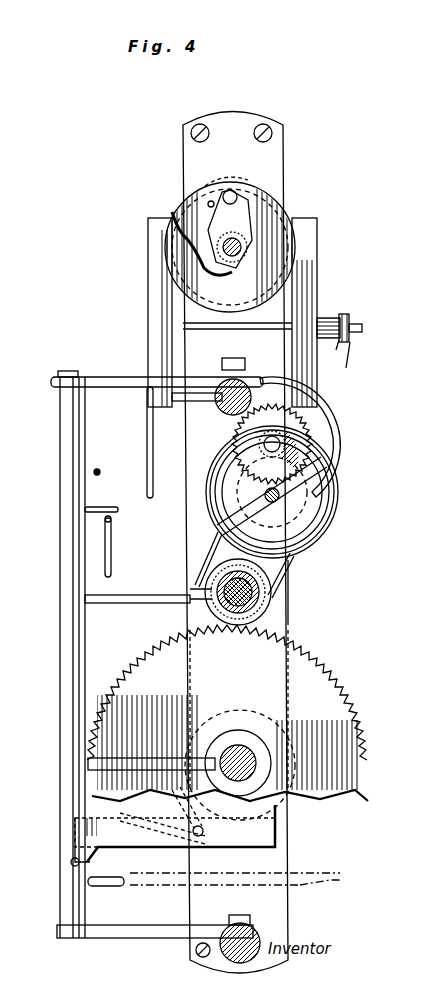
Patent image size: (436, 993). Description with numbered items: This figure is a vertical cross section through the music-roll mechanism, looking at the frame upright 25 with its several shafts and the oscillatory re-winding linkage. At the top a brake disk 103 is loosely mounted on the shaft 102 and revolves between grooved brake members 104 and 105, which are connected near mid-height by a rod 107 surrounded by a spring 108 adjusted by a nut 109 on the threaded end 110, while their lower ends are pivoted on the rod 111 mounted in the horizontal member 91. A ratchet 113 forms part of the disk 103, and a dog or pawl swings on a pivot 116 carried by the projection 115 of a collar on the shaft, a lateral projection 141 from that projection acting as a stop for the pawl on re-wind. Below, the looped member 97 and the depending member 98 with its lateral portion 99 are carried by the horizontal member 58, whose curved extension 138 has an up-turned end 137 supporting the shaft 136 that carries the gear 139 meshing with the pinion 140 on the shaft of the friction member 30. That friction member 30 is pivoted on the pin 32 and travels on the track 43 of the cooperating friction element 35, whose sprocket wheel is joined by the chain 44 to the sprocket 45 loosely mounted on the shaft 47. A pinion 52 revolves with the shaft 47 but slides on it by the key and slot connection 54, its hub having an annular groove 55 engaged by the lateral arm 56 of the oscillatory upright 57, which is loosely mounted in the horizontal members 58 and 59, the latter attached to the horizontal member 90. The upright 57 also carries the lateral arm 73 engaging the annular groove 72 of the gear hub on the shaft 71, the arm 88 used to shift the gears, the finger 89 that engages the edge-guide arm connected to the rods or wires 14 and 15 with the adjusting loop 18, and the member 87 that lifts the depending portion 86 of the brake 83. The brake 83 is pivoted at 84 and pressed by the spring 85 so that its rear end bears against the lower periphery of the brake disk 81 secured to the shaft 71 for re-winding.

The rod or wire 14 is at (98, 469).
The rod or wire 15 is at (111, 519).
The loop portion 18 is at (111, 546).
The upright 25 is at (228, 112).
The friction member 30 is at (272, 496).
The pin 32 is at (312, 540).
The friction element 35 is at (334, 505).
The track 43 is at (296, 566).
The chain 44 is at (322, 592).
The sprocket 45 is at (212, 562).
The shaft 47 is at (236, 626).
The pinion 52 is at (190, 610).
The key and slot connection 54 is at (288, 610).
The annular groove 55 is at (270, 598).
The lateral arm 56 is at (128, 595).
The upright 57 is at (58, 526).
The horizontal member 58 is at (99, 376).
The horizontal member 59 is at (150, 932).
The shaft 71 is at (252, 752).
The annular groove 72 is at (236, 730).
The lateral arm 73 is at (130, 758).
The brake disk 81 is at (280, 812).
The brake 83 is at (105, 828).
The pivot 84 is at (200, 836).
The spring 85 is at (168, 832).
The depending portion 86 is at (72, 838).
The member 87 is at (70, 861).
The arm 88 is at (158, 883).
The finger 89 is at (102, 507).
The horizontal member 90 is at (260, 938).
The horizontal member 91 is at (230, 412).
The looped member 97 is at (200, 378).
The member 98 is at (172, 406).
The lateral portion 99 is at (153, 490).
The shaft 102 is at (232, 257).
The brake disk 103 is at (282, 218).
The brake member 104 is at (150, 266).
The brake member 105 is at (314, 270).
The rod 107 is at (233, 358).
The spring 108 is at (330, 318).
The nut 109 is at (339, 353).
The threaded end 110 is at (339, 364).
The rod 111 is at (196, 398).
The ratchet 113 is at (215, 262).
The projection 115 is at (218, 186).
The pivot 116 is at (236, 193).
The shaft 136 is at (238, 452).
The up-turned end 137 is at (266, 490).
The curved extension 138 is at (327, 420).
The gear 139 is at (272, 444).
The pinion 140 is at (272, 493).
The lateral projection 141 is at (208, 204).